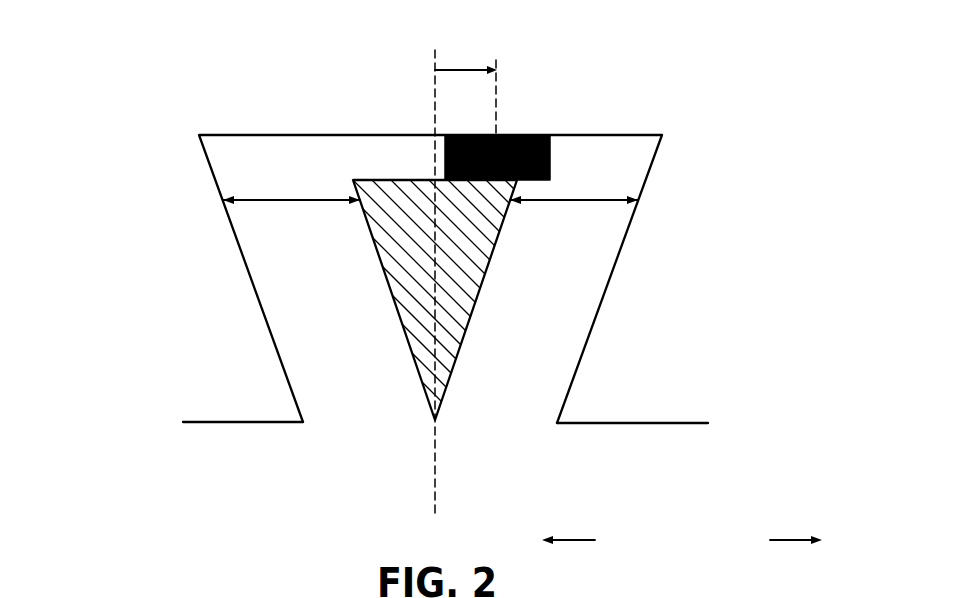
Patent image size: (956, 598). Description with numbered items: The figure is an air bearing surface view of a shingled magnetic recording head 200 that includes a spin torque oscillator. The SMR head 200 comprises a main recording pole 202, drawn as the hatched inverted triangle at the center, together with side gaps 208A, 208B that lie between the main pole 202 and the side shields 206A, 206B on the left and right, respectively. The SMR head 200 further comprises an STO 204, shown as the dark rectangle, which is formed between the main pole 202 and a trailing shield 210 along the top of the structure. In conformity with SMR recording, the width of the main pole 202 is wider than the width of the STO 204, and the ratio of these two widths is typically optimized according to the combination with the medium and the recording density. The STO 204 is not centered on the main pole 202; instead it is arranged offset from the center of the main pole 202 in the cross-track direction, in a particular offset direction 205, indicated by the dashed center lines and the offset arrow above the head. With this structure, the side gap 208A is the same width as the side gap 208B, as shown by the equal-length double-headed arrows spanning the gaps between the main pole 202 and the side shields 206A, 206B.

The SMR head 200 is at (182, 48).
The main pole 202 is at (448, 293).
The STO 204 is at (522, 134).
The offset direction 205 is at (457, 72).
The side shield 206A is at (271, 402).
The side shield 206B is at (620, 397).
The side gap 208A is at (295, 198).
The side gap 208B is at (558, 204).
The trailing shield 210 is at (622, 123).